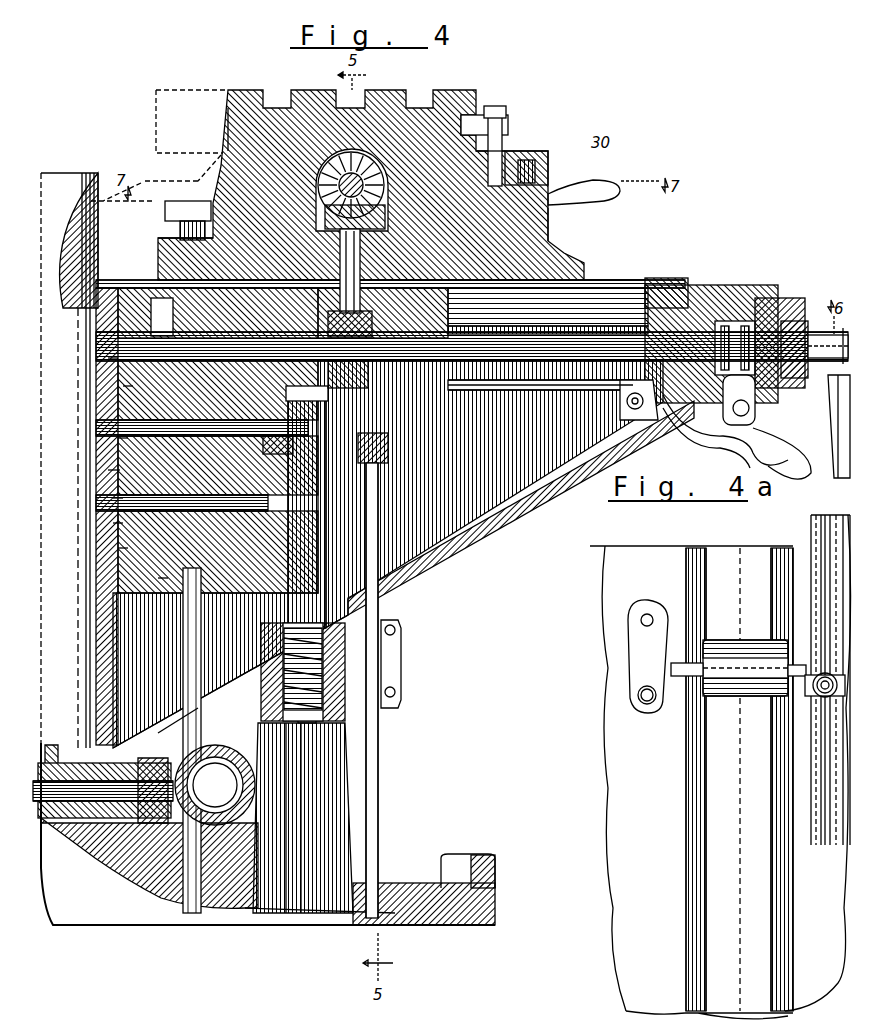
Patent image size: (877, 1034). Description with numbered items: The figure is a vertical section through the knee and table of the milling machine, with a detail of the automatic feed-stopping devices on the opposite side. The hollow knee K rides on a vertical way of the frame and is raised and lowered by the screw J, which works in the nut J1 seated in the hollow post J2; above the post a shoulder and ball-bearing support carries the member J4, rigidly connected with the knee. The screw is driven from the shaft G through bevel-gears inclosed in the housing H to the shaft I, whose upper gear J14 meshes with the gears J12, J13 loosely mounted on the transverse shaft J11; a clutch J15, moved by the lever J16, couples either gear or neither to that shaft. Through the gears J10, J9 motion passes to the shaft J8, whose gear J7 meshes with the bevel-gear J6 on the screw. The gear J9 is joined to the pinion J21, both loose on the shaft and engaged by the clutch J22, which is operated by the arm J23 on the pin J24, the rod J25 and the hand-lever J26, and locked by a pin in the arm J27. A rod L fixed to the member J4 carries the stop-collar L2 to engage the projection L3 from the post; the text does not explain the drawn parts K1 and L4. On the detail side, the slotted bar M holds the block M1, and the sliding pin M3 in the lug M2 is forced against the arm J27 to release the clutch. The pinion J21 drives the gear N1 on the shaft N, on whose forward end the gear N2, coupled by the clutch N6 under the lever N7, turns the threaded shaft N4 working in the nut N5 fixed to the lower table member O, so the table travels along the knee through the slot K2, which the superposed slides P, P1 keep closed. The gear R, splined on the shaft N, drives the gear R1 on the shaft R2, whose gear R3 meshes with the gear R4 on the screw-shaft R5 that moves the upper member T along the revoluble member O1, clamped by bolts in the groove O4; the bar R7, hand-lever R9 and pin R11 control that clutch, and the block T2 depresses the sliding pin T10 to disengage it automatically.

In FIG. 4, the shaft G is at (88, 318).
In FIG. 4, the slide P is at (575, 276).
In FIG. 4, the lower table member O is at (530, 230).
In FIG. 4, the gear R3 is at (378, 190).
In FIG. 4, the gear R4 is at (330, 147).
In FIG. 4, the bar R7 is at (382, 178).
In FIG. 4, the shaft R2 is at (362, 306).
In FIG. 4, the screw-shaft R5 is at (220, 126).
In FIG. 4, the upper sliding member T is at (480, 110).
In FIG. 4, the block T2 is at (490, 108).
In FIG. 4, the sliding pin T10 is at (494, 140).
In FIG. 4, the pin R11 is at (508, 150).
In FIG. 4, the gear R is at (523, 165).
In FIG. 4, the hand-lever R9 is at (582, 172).
In FIG. 4, the annular groove O4 is at (183, 192).
In FIG. 4, the horizontally-revoluble member O1 is at (537, 201).
In FIG. 4, the pin or shaft J24 is at (152, 265).
In FIG. 4, the slide P1 is at (577, 276).
In FIG. 4, the screw J is at (302, 576).
In FIG. 4, the threaded shaft N4 is at (522, 323).
In FIG. 4, the nut N5 is at (458, 298).
In FIG. 4, the gear N2 is at (720, 300).
In FIG. 4, the slot K2 is at (656, 290).
In FIG. 4, the clutch N6 is at (762, 300).
In FIG. 4, the shaft N is at (664, 292).
In FIG. 4, the gear N1 is at (95, 292).
In FIG. 4, the hand-lever J26 is at (690, 430).
In FIG. 4, the lever N7 is at (778, 452).
In FIG. 4, the rod J25 is at (560, 378).
In FIG. 4, the gear R1 is at (532, 366).
In FIG. 4, the knee K is at (447, 548).
In FIG. 4A, the knee K is at (655, 897).
In FIG. 4, the wall edge K1 is at (410, 558).
In FIG. 4, the arm J23 is at (215, 382).
In FIG. 4, the clutch J15 is at (196, 491).
In FIG. 4, the member J4 is at (312, 440).
In FIG. 4, the gear J13 is at (233, 532).
In FIG. 4, the gear J7 is at (268, 432).
In FIG. 4, the bevel-gear J6 is at (350, 395).
In FIG. 4, the shaft J8 is at (317, 480).
In FIG. 4, the rod L is at (373, 715).
In FIG. 4, the rigid projection L3 is at (340, 638).
In FIG. 4, the nut J1 is at (345, 634).
In FIG. 4, the bracket hole L4 is at (388, 618).
In FIG. 4, the stop-collar L2 is at (390, 685).
In FIG. 4, the hollow post J2 is at (313, 773).
In FIG. 4, the housing H is at (200, 735).
In FIG. 4, the shaft I is at (190, 700).
In FIG. 4, the slotted bar M is at (110, 723).
In FIG. 4A, the slotted bar M is at (827, 777).
In FIG. 4, the gear J21 is at (100, 350).
In FIG. 4, the clutch J22 is at (115, 378).
In FIG. 4, the lever J16 is at (110, 430).
In FIG. 4, the gear J9 is at (100, 462).
In FIG. 4, the transverse shaft J11 is at (105, 490).
In FIG. 4, the gear J10 is at (105, 515).
In FIG. 4, the gear J12 is at (110, 540).
In FIG. 4, the gear J14 is at (150, 570).
In FIG. 4A, the lug M2 is at (750, 632).
In FIG. 4A, the sliding pin M3 is at (673, 673).
In FIG. 4A, the block M1 is at (803, 681).
In FIG. 4A, the arm J27 is at (625, 640).